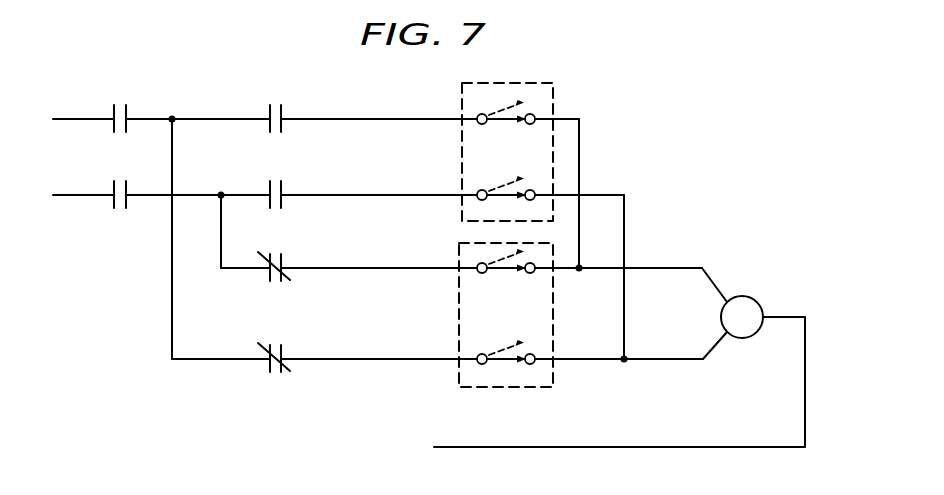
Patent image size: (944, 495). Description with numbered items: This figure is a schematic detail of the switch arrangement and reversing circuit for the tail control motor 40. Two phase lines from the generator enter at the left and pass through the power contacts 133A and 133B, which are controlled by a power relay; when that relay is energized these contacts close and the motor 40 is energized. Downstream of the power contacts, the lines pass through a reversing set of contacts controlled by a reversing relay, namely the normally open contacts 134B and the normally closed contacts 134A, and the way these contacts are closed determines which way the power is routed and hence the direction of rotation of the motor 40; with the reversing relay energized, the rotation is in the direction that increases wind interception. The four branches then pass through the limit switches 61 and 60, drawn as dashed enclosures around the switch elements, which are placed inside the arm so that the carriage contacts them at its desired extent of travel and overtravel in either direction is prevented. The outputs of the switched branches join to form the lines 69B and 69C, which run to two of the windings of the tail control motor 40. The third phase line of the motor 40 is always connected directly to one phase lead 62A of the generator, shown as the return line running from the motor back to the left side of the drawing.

The power contact 133A is at (127, 111).
The power contact 133B is at (113, 203).
The normally open reversing contact 134B is at (283, 123).
The normally closed reversing contact 134A is at (283, 262).
The limit switch 61 is at (462, 88).
The limit switch 60 is at (553, 387).
The motor line 69B is at (665, 268).
The motor line 69C is at (693, 359).
The tail control motor 40 is at (757, 300).
The phase lead 62A is at (657, 447).